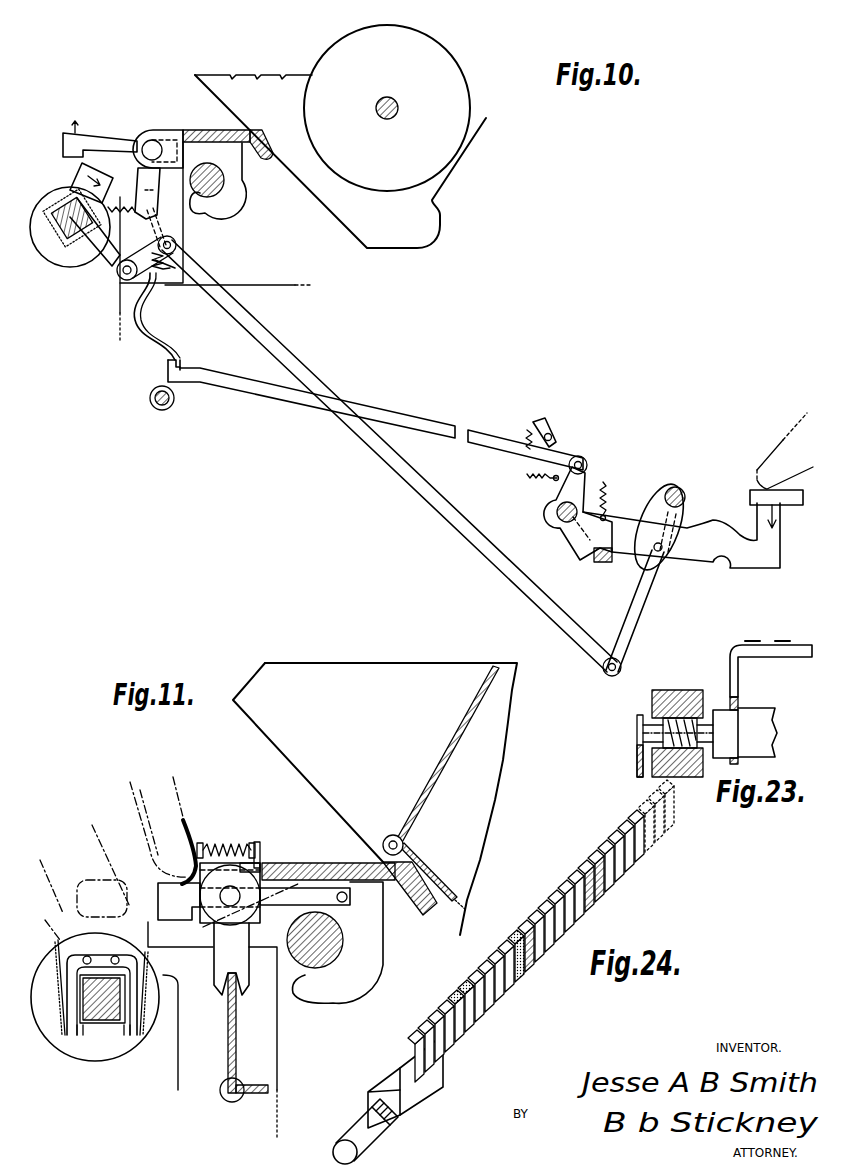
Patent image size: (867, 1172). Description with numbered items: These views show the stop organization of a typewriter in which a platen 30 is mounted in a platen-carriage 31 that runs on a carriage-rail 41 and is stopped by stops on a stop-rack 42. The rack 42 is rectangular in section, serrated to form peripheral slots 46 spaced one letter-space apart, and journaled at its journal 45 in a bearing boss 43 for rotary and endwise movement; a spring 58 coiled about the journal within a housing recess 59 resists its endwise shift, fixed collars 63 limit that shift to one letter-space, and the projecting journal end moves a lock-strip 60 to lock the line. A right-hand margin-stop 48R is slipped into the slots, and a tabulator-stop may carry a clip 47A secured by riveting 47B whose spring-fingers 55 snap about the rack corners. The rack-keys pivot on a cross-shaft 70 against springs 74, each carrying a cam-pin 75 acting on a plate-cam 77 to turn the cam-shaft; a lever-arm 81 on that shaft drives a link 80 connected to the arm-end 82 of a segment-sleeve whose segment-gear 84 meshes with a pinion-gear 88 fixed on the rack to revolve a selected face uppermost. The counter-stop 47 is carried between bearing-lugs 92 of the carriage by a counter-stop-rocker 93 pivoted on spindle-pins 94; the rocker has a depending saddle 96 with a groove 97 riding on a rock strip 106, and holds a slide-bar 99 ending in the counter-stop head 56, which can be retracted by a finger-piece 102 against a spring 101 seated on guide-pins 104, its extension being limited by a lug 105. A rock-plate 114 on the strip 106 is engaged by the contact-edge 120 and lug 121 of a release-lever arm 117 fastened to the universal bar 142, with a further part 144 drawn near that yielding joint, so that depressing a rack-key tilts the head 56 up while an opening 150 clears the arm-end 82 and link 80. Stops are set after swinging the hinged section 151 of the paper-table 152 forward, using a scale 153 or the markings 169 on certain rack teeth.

In FIG. 10, the platen 30 is at (340, 136).
In FIG. 10, the platen-carriage 31 is at (219, 130).
In FIG. 10, the carriage-rail 41 is at (224, 185).
In FIG. 11, the carriage-rail 41 is at (265, 1011).
In FIG. 10, the stop-rack 42 is at (65, 247).
In FIG. 11, the stop-rack 42 is at (107, 1036).
In FIG. 23, the stop-rack 42 is at (787, 727).
In FIG. 24, the stop-rack 42 is at (482, 1076).
In FIG. 23, the bearing boss 43 is at (667, 690).
In FIG. 23, the journal 45 is at (655, 716).
In FIG. 24, the peripheral slots or grooves 46 is at (562, 968).
In FIG. 10, the counter-stop 47 is at (111, 131).
In FIG. 11, the counter-stop 47 is at (287, 912).
In FIG. 11, the clip 47A is at (70, 960).
In FIG. 11, the riveting 47B is at (117, 957).
In FIG. 10, the right-hand margin-stop 48R is at (76, 175).
In FIG. 11, the spring-fingers 55 is at (73, 1008).
In FIG. 10, the counter-stop head 56 is at (63, 146).
In FIG. 11, the counter-stop head 56 is at (156, 900).
In FIG. 23, the spring 58 is at (694, 777).
In FIG. 23, the housing recess 59 is at (670, 777).
In FIG. 23, the lock-strip 60 is at (637, 741).
In FIG. 23, the fixed collars 63 is at (722, 709).
In FIG. 24, the fixed collars 63 is at (370, 1105).
In FIG. 10, the cross-shaft 70 is at (566, 520).
In FIG. 10, the springs 74 is at (605, 490).
In FIG. 10, the cam-pin 75 is at (660, 552).
In FIG. 10, the plate-cam 77 is at (692, 522).
In FIG. 10, the link 80 is at (303, 360).
In FIG. 10, the lever-arm 81 is at (637, 642).
In FIG. 10, the arm-end 82 is at (143, 290).
In FIG. 10, the segment-gear 84 is at (106, 265).
In FIG. 10, the pinion-gear 88 is at (60, 243).
In FIG. 11, the bearing-lugs 92 is at (290, 862).
In FIG. 11, the counter-stop-rocker 93 is at (258, 866).
In FIG. 10, the spindle-pins 94 is at (158, 149).
In FIG. 11, the spindle-pins 94 is at (214, 907).
In FIG. 10, the saddle 96 is at (156, 204).
In FIG. 11, the saddle 96 is at (218, 985).
In FIG. 10, the flute or groove 97 is at (147, 201).
In FIG. 11, the flute or groove 97 is at (231, 970).
In FIG. 11, the counter-stop slide-bar 99 is at (336, 906).
In FIG. 11, the spring 101 is at (228, 846).
In FIG. 11, the finger-piece 102 is at (186, 820).
In FIG. 11, the guide-pins 104 is at (203, 843).
In FIG. 11, the slide-bar lug or pin 105 is at (348, 897).
In FIG. 10, the rock strip or bar 106 is at (150, 284).
In FIG. 11, the rock strip or bar 106 is at (237, 1060).
In FIG. 10, the rock-plate 114 is at (168, 346).
In FIG. 10, the release-lever arm 117 is at (435, 428).
In FIG. 10, the upper contact-edge 120 is at (184, 368).
In FIG. 10, the tab or lug 121 is at (167, 366).
In FIG. 10, the universal bar 142 is at (604, 566).
In FIG. 10, the spring 144 is at (527, 486).
In FIG. 10, the opening 150 is at (178, 234).
In FIG. 11, the upper hinged section 151 is at (462, 740).
In FIG. 11, the paper-table 152 is at (440, 872).
In FIG. 23, the scale 153 is at (801, 645).
In FIG. 24, the markings 169 is at (520, 940).